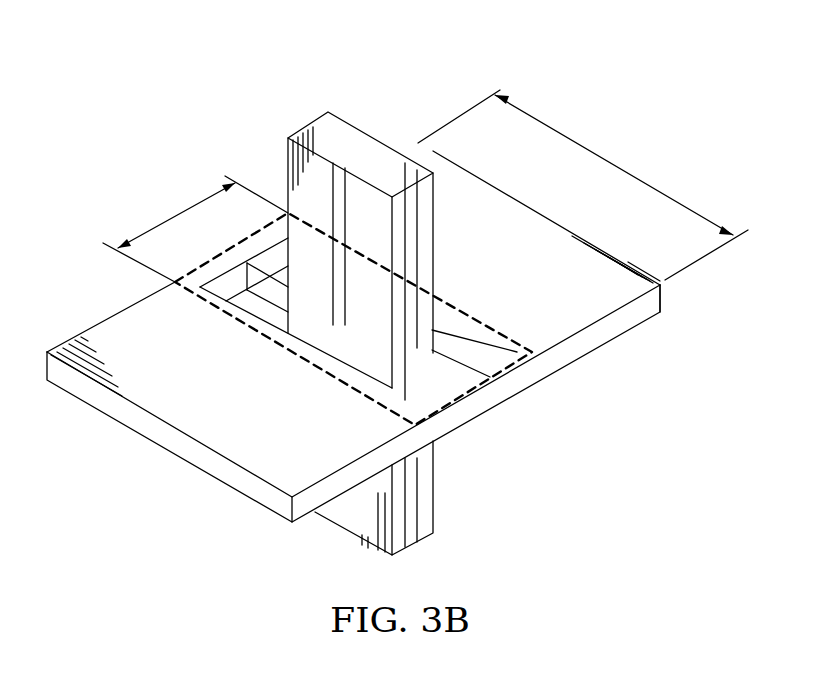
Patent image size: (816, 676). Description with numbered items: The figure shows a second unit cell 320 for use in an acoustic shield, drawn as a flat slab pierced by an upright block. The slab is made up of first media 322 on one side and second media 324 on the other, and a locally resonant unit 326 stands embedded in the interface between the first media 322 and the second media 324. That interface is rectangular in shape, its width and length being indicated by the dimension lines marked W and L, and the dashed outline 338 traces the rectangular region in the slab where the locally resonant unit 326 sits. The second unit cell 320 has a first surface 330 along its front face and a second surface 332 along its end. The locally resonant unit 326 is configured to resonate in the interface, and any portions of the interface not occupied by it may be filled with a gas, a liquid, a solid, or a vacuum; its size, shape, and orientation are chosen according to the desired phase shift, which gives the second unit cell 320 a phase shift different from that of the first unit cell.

The second unit cell 320 is at (222, 98).
The first media 322 is at (112, 327).
The second media 324 is at (500, 202).
The locally resonant unit 326 is at (364, 127).
The first surface 330 is at (172, 440).
The second surface 332 is at (557, 222).
The opening outline 338 is at (360, 239).